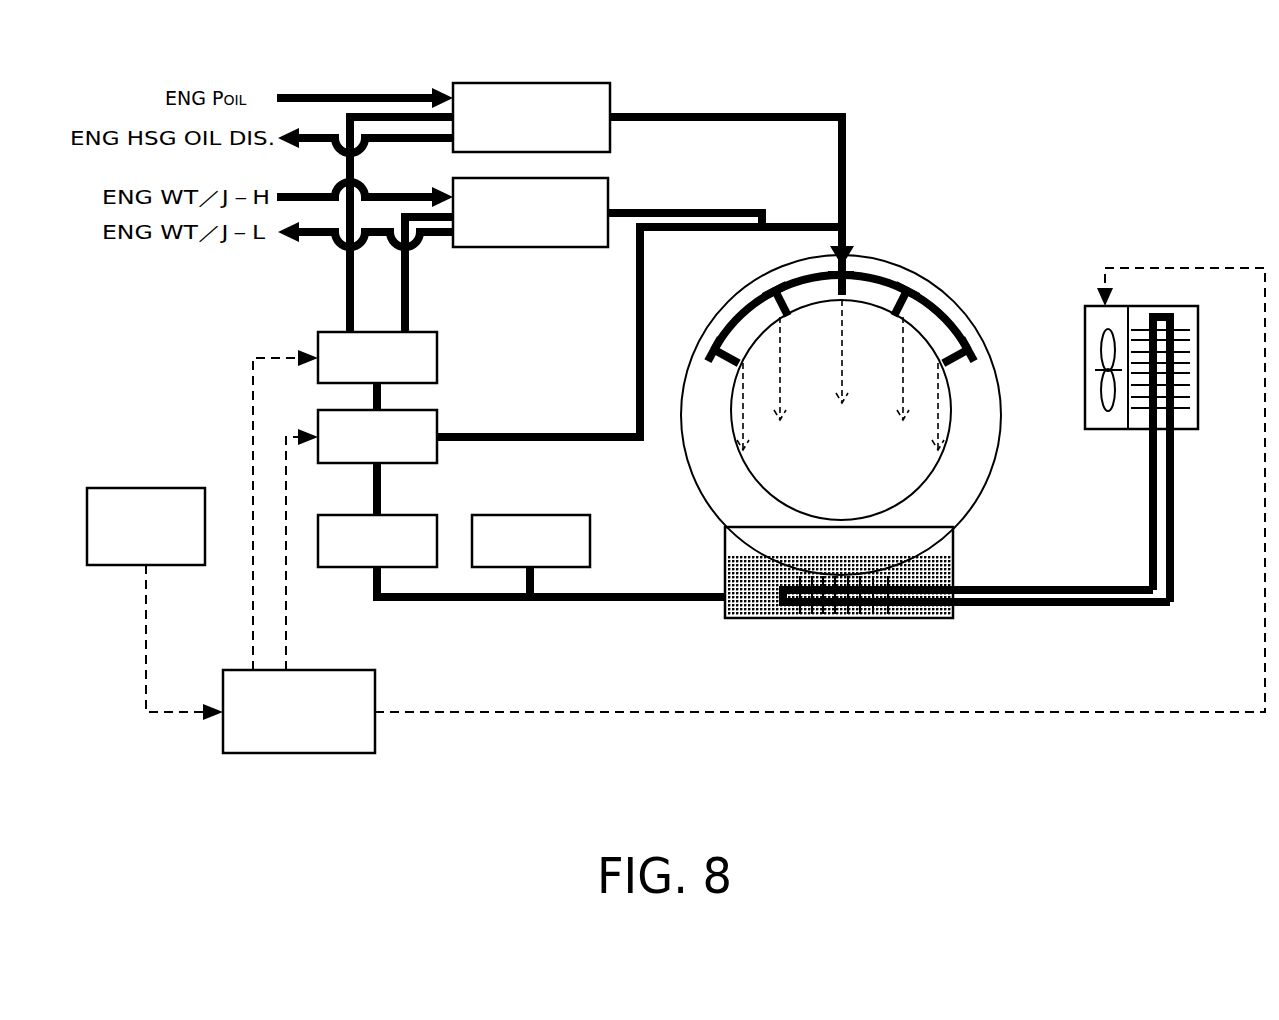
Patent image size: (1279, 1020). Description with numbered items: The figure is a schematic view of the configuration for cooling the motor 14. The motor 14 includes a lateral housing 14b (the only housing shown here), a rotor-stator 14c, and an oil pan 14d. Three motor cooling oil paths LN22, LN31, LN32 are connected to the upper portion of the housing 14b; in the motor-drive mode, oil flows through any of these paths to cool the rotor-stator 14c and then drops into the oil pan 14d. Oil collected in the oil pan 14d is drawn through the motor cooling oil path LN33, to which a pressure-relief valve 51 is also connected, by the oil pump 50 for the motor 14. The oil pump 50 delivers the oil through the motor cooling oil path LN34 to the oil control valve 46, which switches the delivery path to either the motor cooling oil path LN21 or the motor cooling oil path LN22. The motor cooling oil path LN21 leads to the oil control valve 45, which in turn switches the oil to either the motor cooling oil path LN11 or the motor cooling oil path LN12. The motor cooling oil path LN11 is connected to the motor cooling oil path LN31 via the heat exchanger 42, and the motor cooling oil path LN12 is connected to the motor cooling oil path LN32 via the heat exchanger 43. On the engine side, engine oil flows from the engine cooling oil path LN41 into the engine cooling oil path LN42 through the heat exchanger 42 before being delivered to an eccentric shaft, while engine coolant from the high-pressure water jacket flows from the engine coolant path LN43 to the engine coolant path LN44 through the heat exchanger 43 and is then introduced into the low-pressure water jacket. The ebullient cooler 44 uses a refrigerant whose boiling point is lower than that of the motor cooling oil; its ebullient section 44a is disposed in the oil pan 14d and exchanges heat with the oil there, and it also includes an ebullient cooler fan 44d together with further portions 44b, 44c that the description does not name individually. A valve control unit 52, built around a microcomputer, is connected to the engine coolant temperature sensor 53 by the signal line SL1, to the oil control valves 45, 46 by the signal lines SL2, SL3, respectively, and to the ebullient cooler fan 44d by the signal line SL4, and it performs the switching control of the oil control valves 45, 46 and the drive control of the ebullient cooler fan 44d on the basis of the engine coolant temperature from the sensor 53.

The motor 14 is at (864, 413).
The lateral housing 14b is at (898, 262).
The rotor-stator 14c is at (882, 490).
The oil pan 14d is at (735, 620).
The heat exchanger 42 is at (563, 82).
The heat exchanger 43 is at (558, 249).
The ebullient cooler 44 is at (1022, 449).
The ebullient section 44a is at (880, 632).
The radiator 44b is at (1206, 322).
The coolant line 44c is at (1028, 618).
The ebullient cooler fan 44d is at (1072, 356).
The oil control valve 45 is at (440, 352).
The oil control valve 46 is at (437, 418).
The oil pump 50 is at (410, 515).
The pressure-relief valve 51 is at (540, 515).
The valve control unit 52 is at (355, 670).
The engine coolant temperature sensor 53 is at (137, 488).
The motor cooling oil path LN11 is at (346, 280).
The motor cooling oil path LN12 is at (410, 284).
The motor cooling oil path LN21 is at (373, 395).
The motor cooling oil path LN22 is at (522, 433).
The motor cooling oil path LN31 is at (742, 113).
The motor cooling oil path LN32 is at (672, 209).
The motor cooling oil path LN33 is at (585, 601).
The motor cooling oil path LN34 is at (373, 488).
The engine cooling oil path LN41 is at (368, 93).
The engine cooling oil path LN42 is at (313, 133).
The engine coolant path LN43 is at (413, 170).
The engine coolant path LN44 is at (313, 238).
The signal line SL1 is at (146, 688).
The signal line SL2 is at (253, 578).
The signal line SL3 is at (286, 605).
The signal line SL4 is at (498, 715).